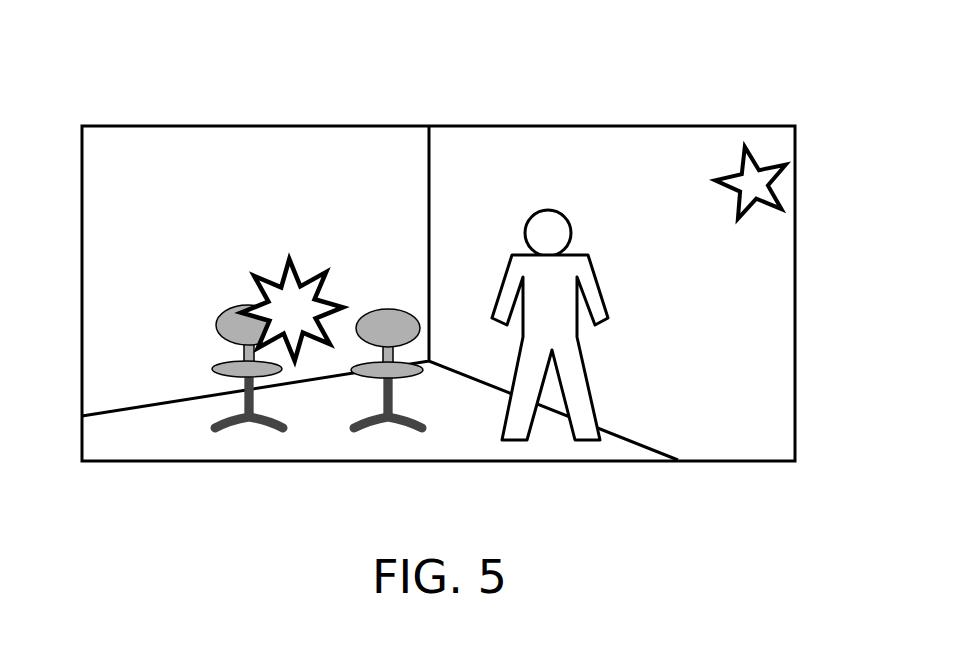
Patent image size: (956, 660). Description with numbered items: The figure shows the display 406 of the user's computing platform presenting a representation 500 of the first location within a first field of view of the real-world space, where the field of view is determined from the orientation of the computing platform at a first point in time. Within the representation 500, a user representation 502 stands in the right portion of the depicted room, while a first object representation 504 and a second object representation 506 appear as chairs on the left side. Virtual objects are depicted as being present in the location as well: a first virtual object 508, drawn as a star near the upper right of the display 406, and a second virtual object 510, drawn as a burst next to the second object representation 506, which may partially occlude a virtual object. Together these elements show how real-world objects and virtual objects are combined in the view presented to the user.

The display 406 is at (508, 126).
The representation 500 is at (157, 203).
The user representation 502 is at (568, 233).
The first object representation 504 is at (395, 308).
The second object representation 506 is at (217, 322).
The first virtual object 508 is at (745, 148).
The second virtual object 510 is at (287, 260).